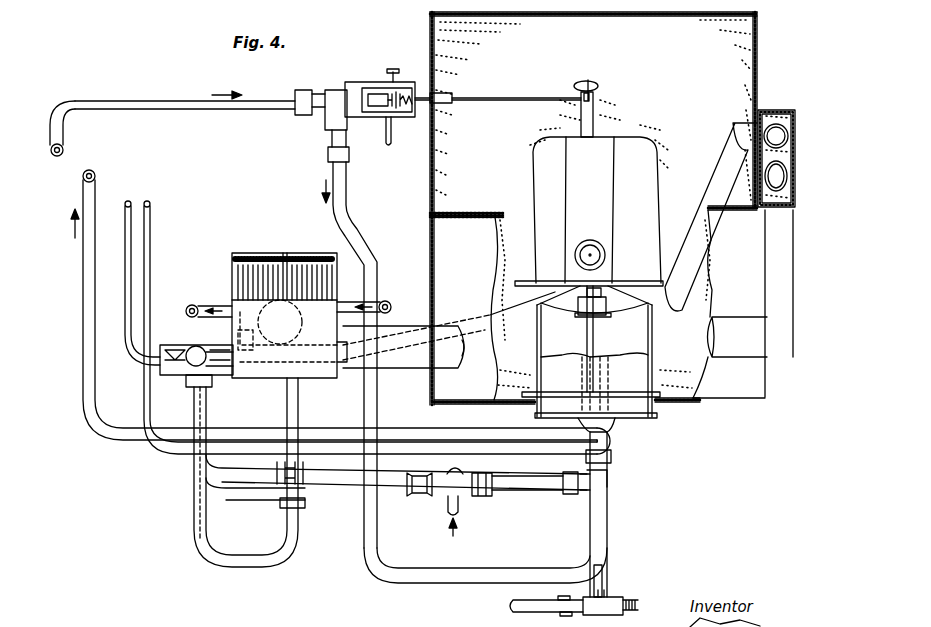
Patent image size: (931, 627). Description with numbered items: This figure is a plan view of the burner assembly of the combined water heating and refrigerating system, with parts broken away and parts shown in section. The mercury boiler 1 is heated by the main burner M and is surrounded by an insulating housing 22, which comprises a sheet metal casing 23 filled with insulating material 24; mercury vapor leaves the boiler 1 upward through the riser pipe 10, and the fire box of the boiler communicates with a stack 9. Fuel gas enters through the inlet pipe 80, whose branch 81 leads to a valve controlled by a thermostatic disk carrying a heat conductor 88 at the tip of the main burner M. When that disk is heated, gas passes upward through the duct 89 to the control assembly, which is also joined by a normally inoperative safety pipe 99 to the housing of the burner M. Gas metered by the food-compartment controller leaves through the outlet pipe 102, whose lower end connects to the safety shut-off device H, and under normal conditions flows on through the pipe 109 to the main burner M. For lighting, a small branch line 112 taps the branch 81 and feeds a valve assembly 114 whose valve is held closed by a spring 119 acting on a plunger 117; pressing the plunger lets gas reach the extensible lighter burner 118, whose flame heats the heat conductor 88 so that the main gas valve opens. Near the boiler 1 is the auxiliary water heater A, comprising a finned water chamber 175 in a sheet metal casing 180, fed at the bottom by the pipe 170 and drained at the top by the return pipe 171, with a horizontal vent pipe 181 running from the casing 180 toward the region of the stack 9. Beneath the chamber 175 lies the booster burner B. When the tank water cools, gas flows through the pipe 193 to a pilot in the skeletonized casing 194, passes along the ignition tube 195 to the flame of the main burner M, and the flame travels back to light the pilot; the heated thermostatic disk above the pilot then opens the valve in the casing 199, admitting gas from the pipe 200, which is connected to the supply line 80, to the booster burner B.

The boiler 1 is at (640, 190).
The stack 9 is at (690, 275).
The riser pipe 10 is at (590, 242).
The insulating housing 22 is at (758, 68).
The sheet metal casing 23 is at (758, 40).
The insulating material 24 is at (542, 99).
The inlet pipe 80 is at (446, 506).
The branch 81 is at (524, 486).
The heat conductor 88 is at (600, 272).
The duct 89 is at (92, 383).
The safety pipe 99 is at (148, 407).
The outlet pipe 102 is at (165, 118).
The pipe 109 is at (341, 183).
The branch line 112 is at (522, 600).
The valve assembly 114 is at (628, 584).
The plunger 117 is at (639, 605).
The lighter burner 118 is at (612, 560).
The spring 119 is at (630, 595).
The pipe 170 is at (380, 302).
The return pipe 171 is at (222, 306).
The finned water chamber 175 is at (232, 271).
The sheet metal casing 180 is at (300, 253).
The vent pipe 181 is at (398, 360).
The pipe 193 is at (125, 214).
The skeletonized casing 194 is at (210, 378).
The ignition tube 195 is at (505, 318).
The casing 199 is at (198, 346).
The pipe 200 is at (332, 492).
The auxiliary water heater A is at (247, 248).
The booster burner B is at (290, 252).
The safety shut-off device H is at (370, 80).
The main burner M is at (676, 431).